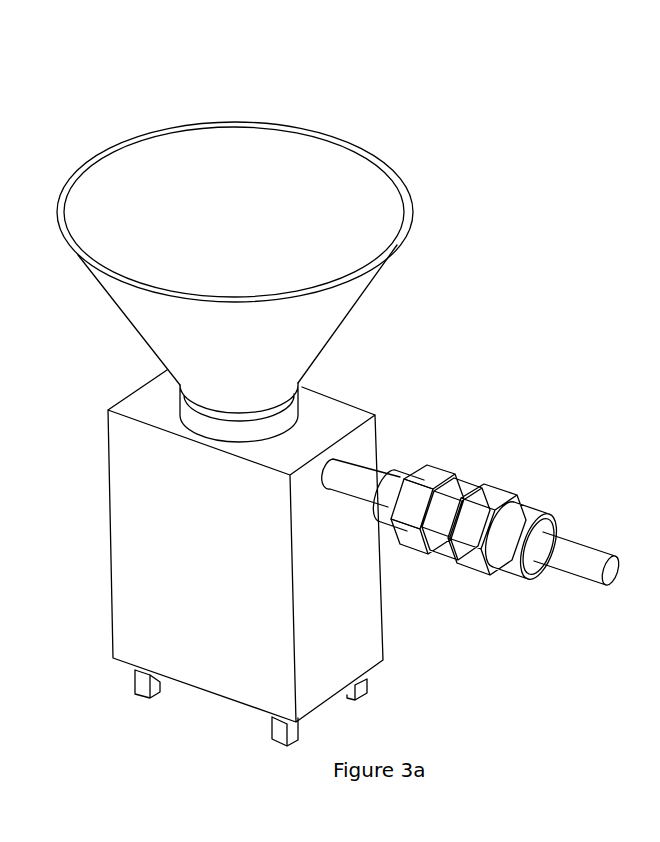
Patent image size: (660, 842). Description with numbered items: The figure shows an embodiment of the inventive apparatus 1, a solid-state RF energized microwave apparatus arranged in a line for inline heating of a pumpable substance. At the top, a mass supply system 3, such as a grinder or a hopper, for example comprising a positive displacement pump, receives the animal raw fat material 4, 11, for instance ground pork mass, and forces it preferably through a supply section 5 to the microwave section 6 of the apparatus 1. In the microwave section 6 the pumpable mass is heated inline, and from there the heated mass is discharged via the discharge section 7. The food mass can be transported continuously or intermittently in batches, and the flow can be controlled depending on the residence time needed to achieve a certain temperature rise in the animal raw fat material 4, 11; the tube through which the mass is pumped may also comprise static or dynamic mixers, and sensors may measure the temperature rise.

The apparatus 1 is at (453, 473).
The mass supply system 3 is at (99, 153).
The animal raw fat material 4 is at (235, 262).
The supply section 5 is at (360, 483).
The microwave section 6 is at (453, 473).
The discharge section 7 is at (564, 550).
The animal raw fat material 11 is at (235, 262).